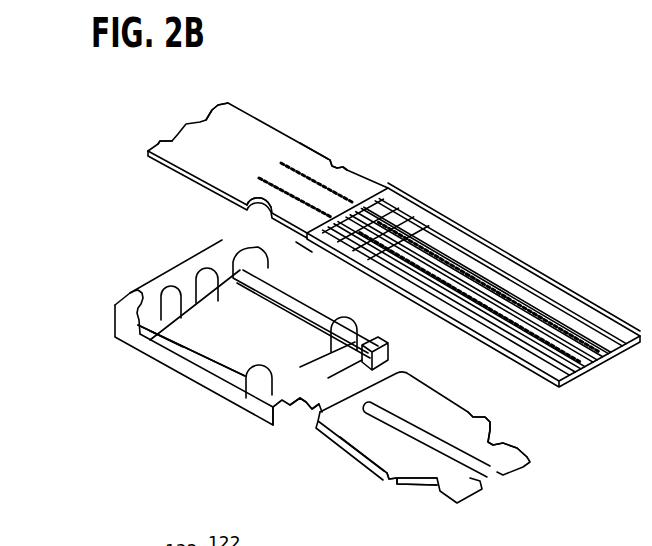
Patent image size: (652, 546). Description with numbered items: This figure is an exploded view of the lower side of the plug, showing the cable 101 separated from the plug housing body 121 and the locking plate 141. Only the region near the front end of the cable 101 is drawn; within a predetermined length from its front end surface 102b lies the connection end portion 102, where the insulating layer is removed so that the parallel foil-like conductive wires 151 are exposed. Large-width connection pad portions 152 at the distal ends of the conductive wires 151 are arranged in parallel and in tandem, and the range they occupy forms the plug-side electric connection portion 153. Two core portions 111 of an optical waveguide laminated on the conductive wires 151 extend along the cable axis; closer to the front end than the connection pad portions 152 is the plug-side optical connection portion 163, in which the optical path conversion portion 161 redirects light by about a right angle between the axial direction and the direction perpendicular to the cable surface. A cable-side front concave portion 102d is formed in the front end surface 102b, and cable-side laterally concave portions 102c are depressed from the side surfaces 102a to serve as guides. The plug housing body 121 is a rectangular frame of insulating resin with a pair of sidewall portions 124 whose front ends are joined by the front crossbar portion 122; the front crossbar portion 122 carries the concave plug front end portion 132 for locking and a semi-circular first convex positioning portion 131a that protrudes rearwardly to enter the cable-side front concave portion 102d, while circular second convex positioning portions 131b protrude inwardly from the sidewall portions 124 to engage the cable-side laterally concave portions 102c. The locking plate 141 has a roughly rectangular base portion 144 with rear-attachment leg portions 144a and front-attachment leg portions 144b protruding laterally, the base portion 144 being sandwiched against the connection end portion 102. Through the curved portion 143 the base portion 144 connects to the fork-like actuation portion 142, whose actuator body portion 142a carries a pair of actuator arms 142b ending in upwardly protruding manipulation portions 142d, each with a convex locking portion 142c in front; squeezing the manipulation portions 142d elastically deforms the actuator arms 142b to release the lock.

The cable 101 is at (472, 270).
The connection end portion 102 is at (198, 168).
The side surfaces 102a is at (245, 205).
The front end surface 102b is at (157, 142).
The cable-side laterally concave portion 102c is at (336, 164).
The cable-side front concave portion 102d is at (208, 116).
The core portion 111 is at (342, 200).
The plug housing body 121 is at (138, 346).
The front crossbar portion 122 is at (124, 302).
The sidewall portions 124 is at (330, 305).
The first convex positioning portion 131a is at (172, 296).
The second convex positioning portions 131b is at (258, 392).
The concave plug front end portion 132 is at (180, 262).
The locking plate 141 is at (410, 338).
The actuation portion 142 is at (337, 437).
The actuator body portion 142a is at (420, 374).
The actuator arms 142b is at (372, 455).
The convex locking portion 142c is at (392, 478).
The manipulation portion 142d is at (520, 450).
The curved portion 143 is at (307, 420).
The base portion 144 is at (227, 350).
The rear-attachment leg portions 144a is at (272, 430).
The front-attachment leg portions 144b is at (184, 347).
The conductive wires 151 is at (437, 214).
The connection pad portions 152 is at (371, 205).
The plug-side electric connection portion 153 is at (295, 242).
The optical path conversion portion 161 is at (283, 167).
The plug-side optical connection portion 163 is at (322, 152).